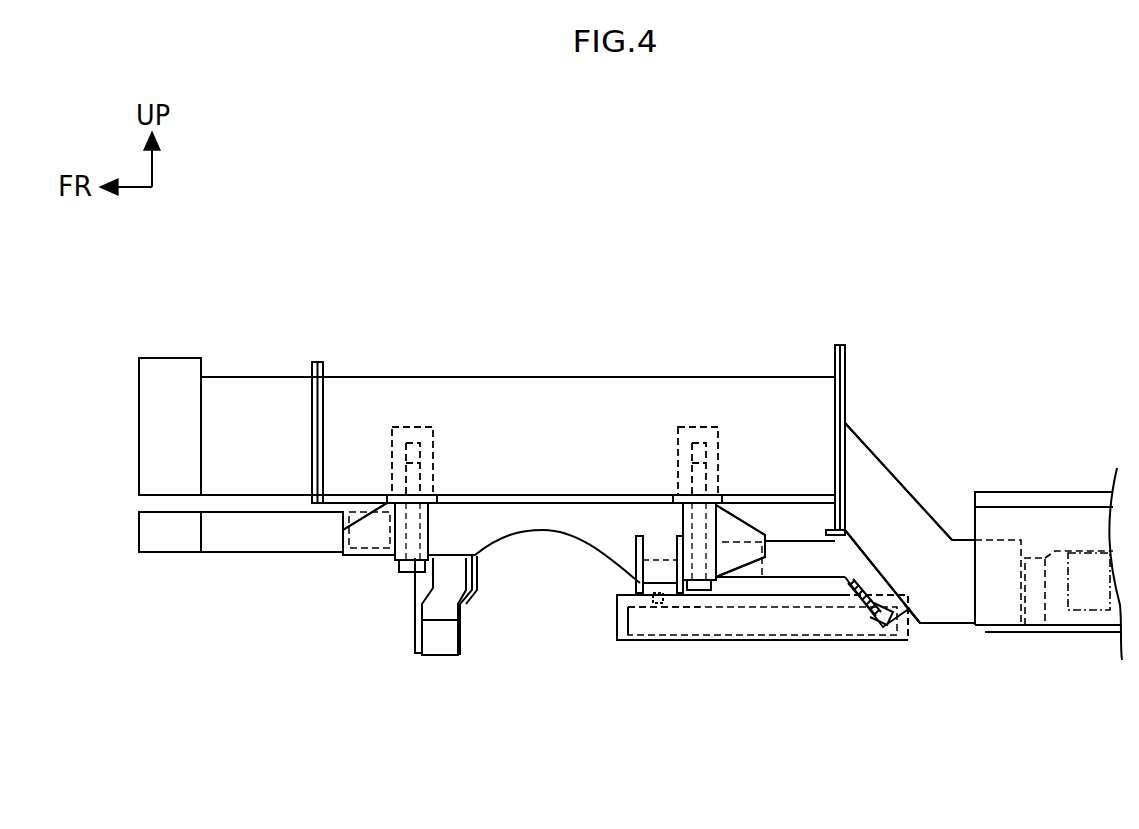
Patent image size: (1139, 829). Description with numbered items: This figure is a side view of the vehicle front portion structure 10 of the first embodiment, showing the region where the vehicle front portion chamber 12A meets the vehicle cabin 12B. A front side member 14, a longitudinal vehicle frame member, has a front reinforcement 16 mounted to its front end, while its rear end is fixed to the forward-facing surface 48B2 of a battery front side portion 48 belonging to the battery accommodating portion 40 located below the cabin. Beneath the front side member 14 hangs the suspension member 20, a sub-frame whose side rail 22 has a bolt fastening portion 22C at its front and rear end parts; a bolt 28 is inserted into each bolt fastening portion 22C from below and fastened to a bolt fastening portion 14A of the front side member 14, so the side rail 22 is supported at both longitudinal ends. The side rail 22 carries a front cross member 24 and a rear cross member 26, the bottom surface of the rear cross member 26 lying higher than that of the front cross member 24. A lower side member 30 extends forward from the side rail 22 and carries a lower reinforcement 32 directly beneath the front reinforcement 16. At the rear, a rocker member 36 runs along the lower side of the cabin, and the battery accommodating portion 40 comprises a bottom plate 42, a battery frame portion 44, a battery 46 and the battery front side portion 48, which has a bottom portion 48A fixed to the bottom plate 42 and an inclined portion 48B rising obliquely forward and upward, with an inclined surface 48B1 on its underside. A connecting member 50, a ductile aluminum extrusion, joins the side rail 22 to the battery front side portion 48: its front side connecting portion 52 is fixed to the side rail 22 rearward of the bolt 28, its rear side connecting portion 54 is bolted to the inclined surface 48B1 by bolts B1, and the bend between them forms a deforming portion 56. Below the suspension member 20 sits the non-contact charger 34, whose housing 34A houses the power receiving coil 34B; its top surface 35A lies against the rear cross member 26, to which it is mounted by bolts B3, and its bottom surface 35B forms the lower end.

The vehicle lower structure 10 is at (985, 170).
The vehicle front portion chamber 12A is at (644, 262).
The vehicle cabin 12B is at (1096, 269).
The front side member 14 is at (523, 377).
The bolt fastening portion 14A is at (435, 448).
The front reinforcement 16 is at (170, 358).
The suspension member 20 is at (391, 630).
The side rail 22 is at (532, 531).
The bolt fastening portion 22C is at (432, 522).
The front cross member 24 is at (438, 646).
The rear cross member 26 is at (655, 592).
The bolt 28 is at (410, 572).
The lower side member 30 is at (268, 552).
The lower reinforcement 32 is at (170, 552).
The non-contact charger 34 is at (650, 698).
The housing 34A is at (615, 620).
The power receiving coil 34B is at (647, 640).
The top surface 35A is at (637, 585).
The bottom surface 35B is at (670, 641).
The rocker member 36 is at (1058, 491).
The battery accommodating portion 40 is at (898, 278).
The bottom plate 42 is at (1014, 598).
The battery frame portion 44 is at (1033, 635).
The battery 46 is at (1082, 612).
The battery front side portion 48 is at (884, 458).
The bottom portion 48A is at (967, 547).
The inclined portion 48B is at (917, 517).
The inclined surface 48B1 is at (913, 624).
The forward-facing surface 48B2 is at (835, 442).
The connecting member 50 is at (777, 687).
The front side connecting portion 52 is at (762, 578).
The rear side connecting portion 54 is at (888, 613).
The deforming portion 56 is at (840, 583).
The bolt B1 is at (860, 608).
The bolt B3 is at (617, 604).